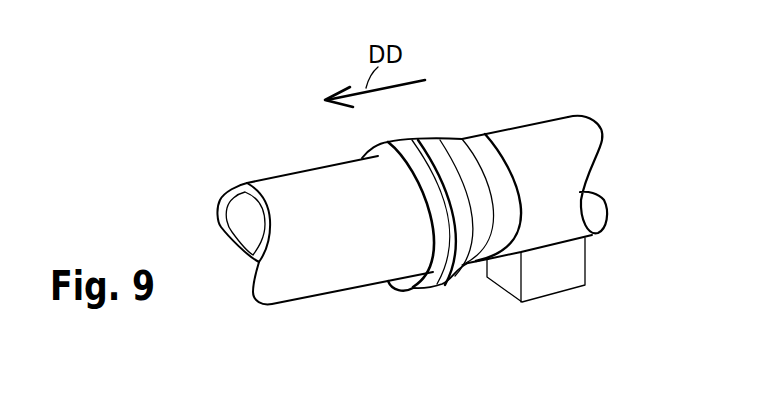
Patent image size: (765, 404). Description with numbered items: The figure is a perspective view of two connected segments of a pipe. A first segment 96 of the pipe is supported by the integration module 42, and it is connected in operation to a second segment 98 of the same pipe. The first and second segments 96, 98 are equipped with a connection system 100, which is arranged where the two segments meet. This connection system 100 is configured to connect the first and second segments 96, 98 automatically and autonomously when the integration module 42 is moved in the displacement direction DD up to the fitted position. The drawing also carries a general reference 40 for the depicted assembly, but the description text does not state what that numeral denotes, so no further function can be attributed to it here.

The connector assembly 40 is at (513, 173).
The integration module 42 is at (563, 269).
The first segment 96 is at (558, 167).
The second segment 98 is at (332, 263).
The connection system 100 is at (479, 289).